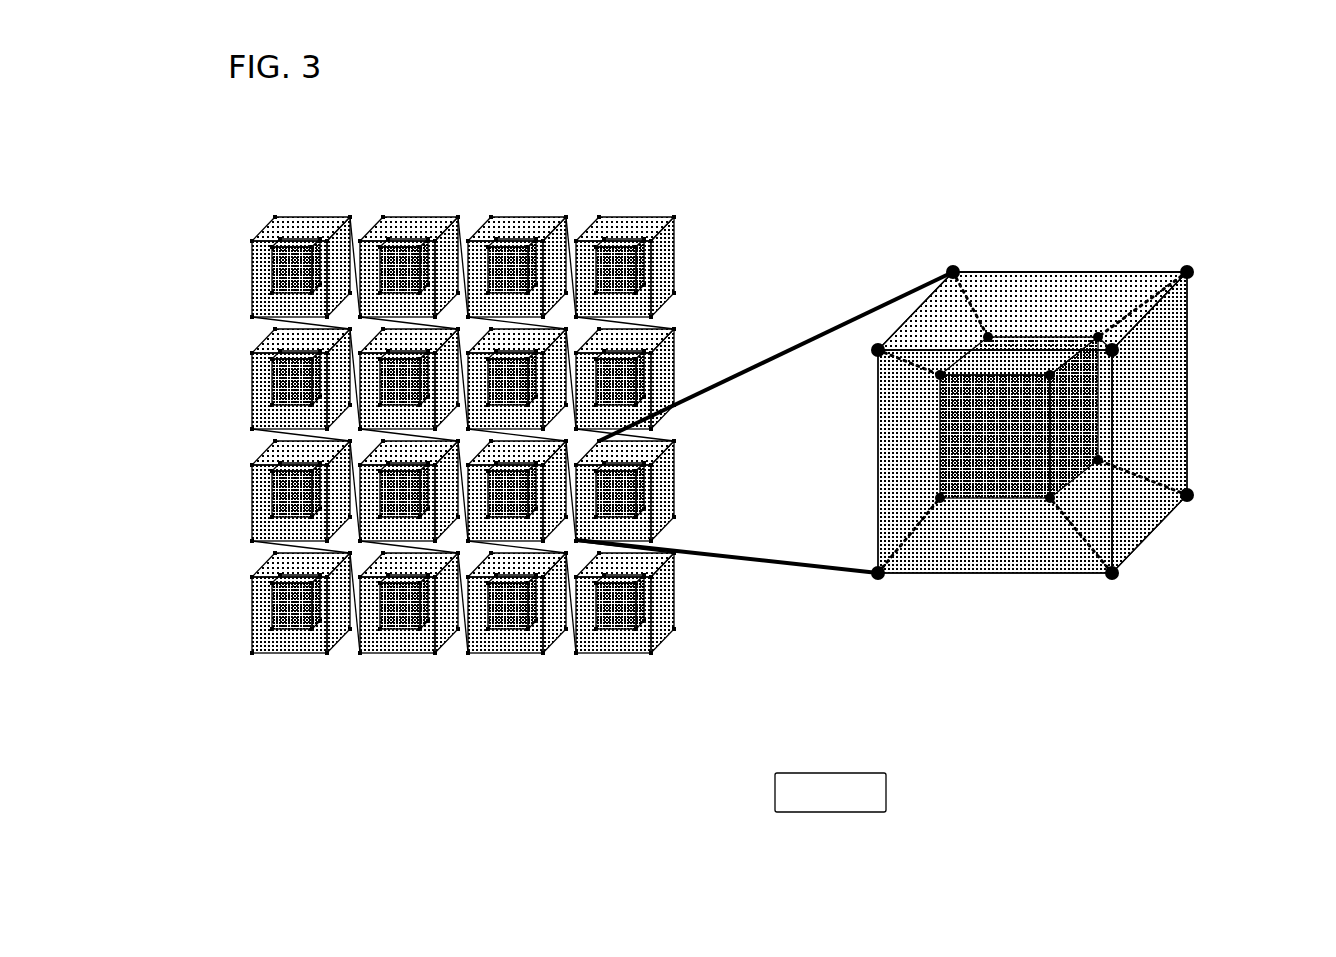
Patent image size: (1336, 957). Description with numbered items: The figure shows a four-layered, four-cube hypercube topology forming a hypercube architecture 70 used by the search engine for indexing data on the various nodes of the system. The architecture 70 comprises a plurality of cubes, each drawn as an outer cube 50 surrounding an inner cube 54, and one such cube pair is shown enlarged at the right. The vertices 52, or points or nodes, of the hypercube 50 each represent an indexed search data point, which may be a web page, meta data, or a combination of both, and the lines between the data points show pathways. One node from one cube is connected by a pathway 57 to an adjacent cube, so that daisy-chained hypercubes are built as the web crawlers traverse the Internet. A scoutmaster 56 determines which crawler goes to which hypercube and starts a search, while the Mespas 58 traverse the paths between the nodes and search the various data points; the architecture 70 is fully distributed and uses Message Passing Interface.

The cube 50 is at (252, 268).
The vertices 52 is at (256, 217).
The cube 54 is at (262, 405).
The scoutmaster 56 is at (812, 812).
The pathway 57 is at (863, 307).
The Mespas 58 is at (1050, 252).
The hypercube architecture 70 is at (892, 128).